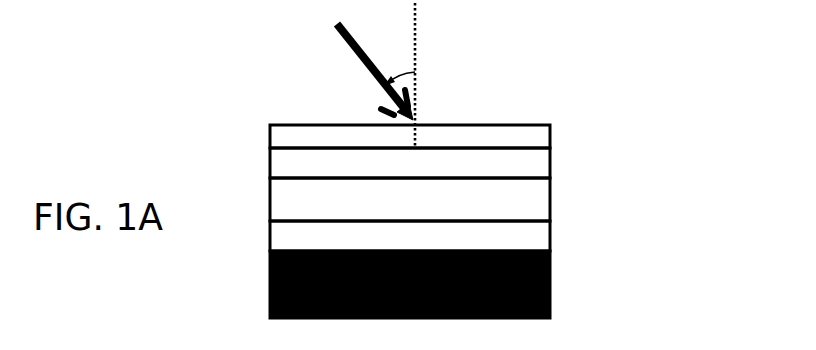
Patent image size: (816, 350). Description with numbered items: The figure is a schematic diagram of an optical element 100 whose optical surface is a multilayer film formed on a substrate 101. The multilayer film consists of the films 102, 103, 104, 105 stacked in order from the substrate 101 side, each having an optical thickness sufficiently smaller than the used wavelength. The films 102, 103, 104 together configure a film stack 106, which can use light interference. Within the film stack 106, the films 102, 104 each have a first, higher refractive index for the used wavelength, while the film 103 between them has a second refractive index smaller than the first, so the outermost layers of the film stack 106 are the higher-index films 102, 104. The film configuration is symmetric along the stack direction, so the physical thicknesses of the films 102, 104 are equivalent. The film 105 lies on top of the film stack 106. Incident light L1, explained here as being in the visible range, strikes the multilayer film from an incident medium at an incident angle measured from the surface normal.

The optical element 100 is at (682, 95).
The substrate 101 is at (555, 283).
The film 102 is at (555, 242).
The film 103 is at (555, 196).
The film 104 is at (555, 168).
The film 105 is at (555, 141).
The film stack 106 is at (630, 152).
The incident light L1 is at (360, 44).